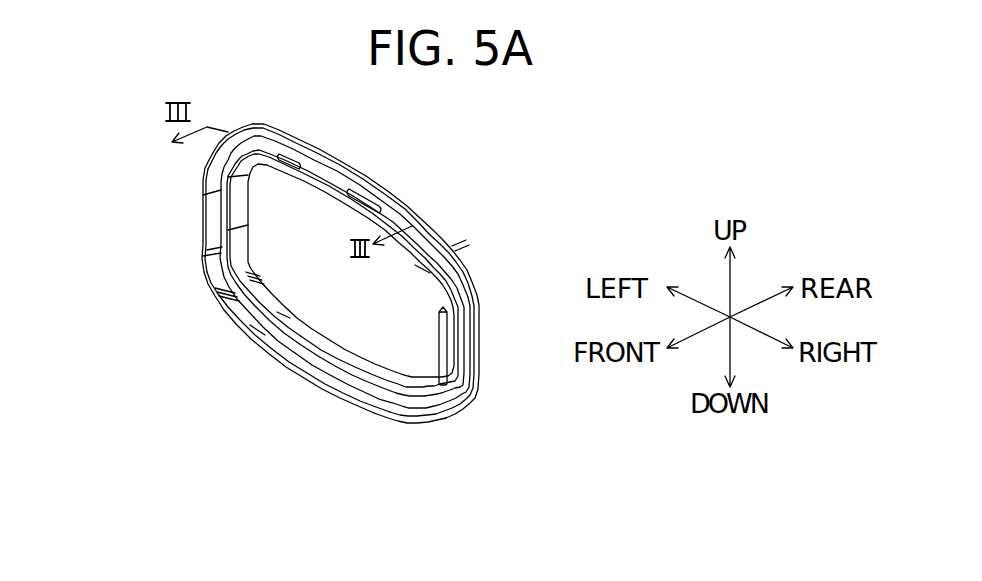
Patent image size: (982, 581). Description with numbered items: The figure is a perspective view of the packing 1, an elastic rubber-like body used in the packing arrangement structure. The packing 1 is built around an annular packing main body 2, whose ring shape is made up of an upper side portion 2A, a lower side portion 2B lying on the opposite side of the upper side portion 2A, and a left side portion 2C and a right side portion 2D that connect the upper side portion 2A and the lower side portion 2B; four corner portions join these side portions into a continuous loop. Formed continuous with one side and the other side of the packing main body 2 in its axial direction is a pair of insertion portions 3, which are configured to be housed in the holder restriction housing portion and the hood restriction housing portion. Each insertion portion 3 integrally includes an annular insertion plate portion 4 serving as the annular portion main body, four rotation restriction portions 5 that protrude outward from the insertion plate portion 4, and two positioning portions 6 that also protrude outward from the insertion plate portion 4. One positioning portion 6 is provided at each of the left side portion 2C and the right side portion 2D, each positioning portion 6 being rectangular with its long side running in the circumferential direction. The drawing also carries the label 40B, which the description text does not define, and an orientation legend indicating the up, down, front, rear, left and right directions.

The packing 1 is at (421, 167).
The packing main body 2 is at (407, 208).
The upper side portion 2A is at (365, 182).
The lower side portion 2B is at (278, 360).
The left side portion 2C is at (203, 223).
The right side portion 2D is at (467, 345).
The insertion portion 3 is at (435, 340).
The insertion plate portion 4 is at (405, 421).
The rotation restriction portion 5 is at (293, 156).
The positioning portion 6 is at (449, 347).
The inner groove 40B is at (332, 352).